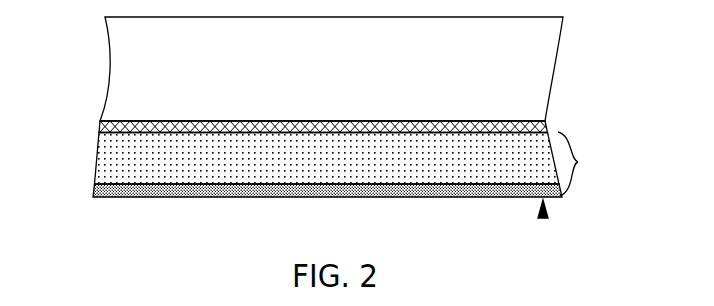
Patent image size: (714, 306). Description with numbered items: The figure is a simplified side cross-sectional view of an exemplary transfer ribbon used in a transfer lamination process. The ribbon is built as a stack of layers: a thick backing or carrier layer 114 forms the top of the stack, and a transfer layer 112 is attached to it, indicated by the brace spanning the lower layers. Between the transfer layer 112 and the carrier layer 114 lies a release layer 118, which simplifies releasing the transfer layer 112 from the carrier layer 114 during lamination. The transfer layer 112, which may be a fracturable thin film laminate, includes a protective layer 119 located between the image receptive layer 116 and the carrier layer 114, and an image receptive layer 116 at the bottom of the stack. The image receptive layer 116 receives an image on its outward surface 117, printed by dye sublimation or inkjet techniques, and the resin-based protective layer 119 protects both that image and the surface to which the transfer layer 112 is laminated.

The transfer layer 112 is at (578, 162).
The carrier layer 114 is at (550, 55).
The image receptive layer 116 is at (115, 197).
The surface 117 is at (543, 218).
The release layer 118 is at (100, 124).
The protective layer 119 is at (96, 172).